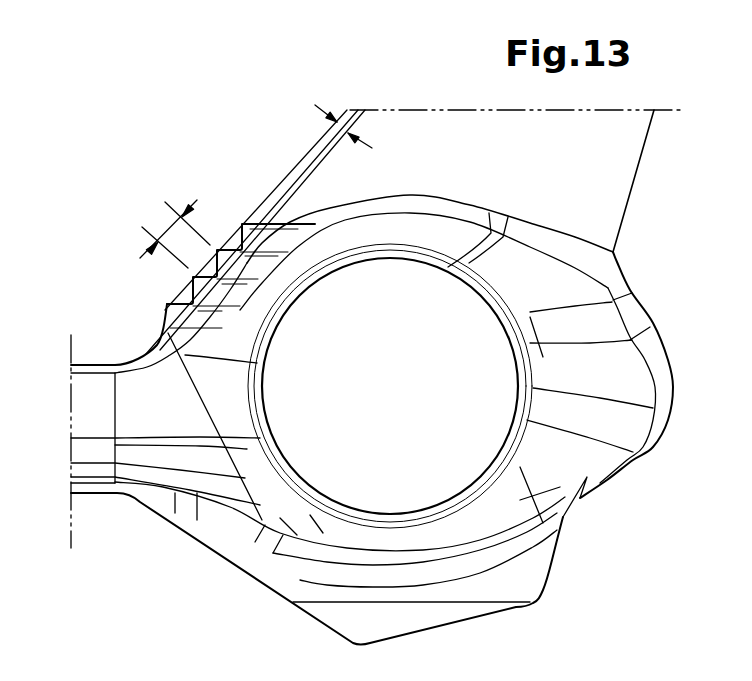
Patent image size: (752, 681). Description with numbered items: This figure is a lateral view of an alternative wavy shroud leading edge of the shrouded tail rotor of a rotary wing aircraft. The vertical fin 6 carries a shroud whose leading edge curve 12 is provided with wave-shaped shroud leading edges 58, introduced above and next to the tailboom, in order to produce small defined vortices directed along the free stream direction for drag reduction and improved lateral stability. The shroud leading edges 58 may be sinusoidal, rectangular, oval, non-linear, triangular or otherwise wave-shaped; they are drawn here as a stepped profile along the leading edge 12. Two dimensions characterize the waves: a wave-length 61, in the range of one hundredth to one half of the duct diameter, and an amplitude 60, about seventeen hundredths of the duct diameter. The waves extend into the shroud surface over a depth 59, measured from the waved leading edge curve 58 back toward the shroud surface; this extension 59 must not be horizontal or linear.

The vertical fin 6 is at (616, 173).
The shroud's leading edge 12 is at (272, 160).
The shroud leading edges 58 is at (150, 299).
The depth 59 is at (210, 348).
The amplitude 60 is at (349, 110).
The wave-length 61 is at (165, 222).